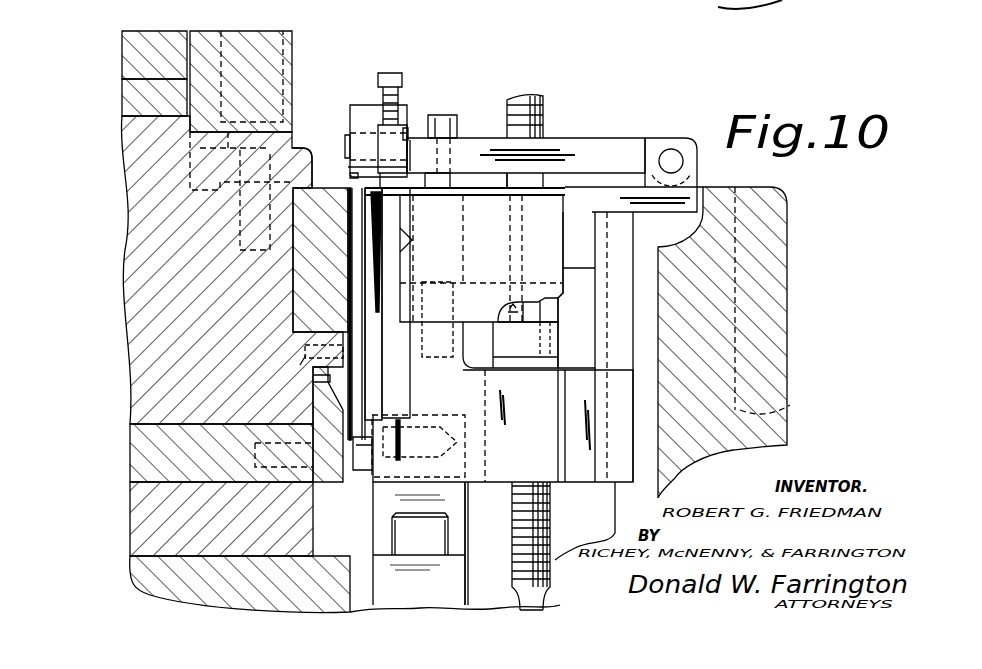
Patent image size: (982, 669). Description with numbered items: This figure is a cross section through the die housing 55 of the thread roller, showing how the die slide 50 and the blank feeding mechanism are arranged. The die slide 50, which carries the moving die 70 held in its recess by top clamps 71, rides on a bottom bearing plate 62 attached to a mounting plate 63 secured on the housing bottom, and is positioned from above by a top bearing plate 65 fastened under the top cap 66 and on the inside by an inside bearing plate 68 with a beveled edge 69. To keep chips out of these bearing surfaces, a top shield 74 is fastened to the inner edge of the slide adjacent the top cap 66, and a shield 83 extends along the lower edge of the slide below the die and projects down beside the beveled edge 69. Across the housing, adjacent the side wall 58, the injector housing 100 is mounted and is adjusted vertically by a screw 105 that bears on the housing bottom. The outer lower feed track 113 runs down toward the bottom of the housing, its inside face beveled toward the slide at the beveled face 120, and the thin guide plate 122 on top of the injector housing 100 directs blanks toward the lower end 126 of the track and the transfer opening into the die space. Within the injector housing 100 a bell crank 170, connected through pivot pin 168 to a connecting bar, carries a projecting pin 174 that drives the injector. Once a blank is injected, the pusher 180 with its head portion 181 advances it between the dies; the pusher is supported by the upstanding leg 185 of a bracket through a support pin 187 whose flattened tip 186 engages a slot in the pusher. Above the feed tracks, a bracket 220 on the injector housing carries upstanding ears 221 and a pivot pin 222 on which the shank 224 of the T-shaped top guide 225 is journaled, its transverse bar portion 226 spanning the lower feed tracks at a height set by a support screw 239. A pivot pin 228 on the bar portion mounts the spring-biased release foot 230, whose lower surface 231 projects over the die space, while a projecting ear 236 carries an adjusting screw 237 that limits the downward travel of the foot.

The die slide 50 is at (218, 308).
The die housing 55 is at (270, 583).
The side wall 58 is at (788, 322).
The bearing plate 62 is at (195, 458).
The mounting plate 63 is at (195, 515).
The top bearing plate 65 is at (163, 103).
The top cap 66 is at (166, 30).
The inside bearing plate 68 is at (313, 390).
The beveled edge 69 is at (313, 378).
The moving die 70 is at (294, 276).
The top clamps 71 is at (306, 157).
The top shield 74 is at (243, 31).
The shield 83 is at (322, 347).
The injector housing 100 is at (537, 445).
The screw 105 is at (543, 102).
The outer lower feed track 113 is at (380, 360).
The beveled face 120 is at (382, 250).
The guide plate 122 is at (497, 190).
The lower end of track 126 is at (370, 222).
The pivot pin 168 is at (455, 366).
The bell crank 170 is at (556, 350).
The projecting pin 174 is at (540, 310).
The pusher 180 is at (366, 398).
The head portion 181 is at (352, 242).
The upstanding leg 185 is at (385, 516).
The flattened tip 186 is at (353, 470).
The support pin 187 is at (428, 416).
The bracket 220 is at (690, 188).
The upstanding ears 221 is at (688, 136).
The pivot pin 222 is at (670, 148).
The shank 224 is at (568, 138).
The top guide 225 is at (437, 160).
The transverse bar portion 226 is at (408, 128).
The pivot pin 228 is at (345, 140).
The release foot 230 is at (350, 112).
The lower surface 231 is at (352, 178).
The projecting ear 236 is at (405, 124).
The adjusting screw 237 is at (380, 72).
The support screw 239 is at (447, 116).